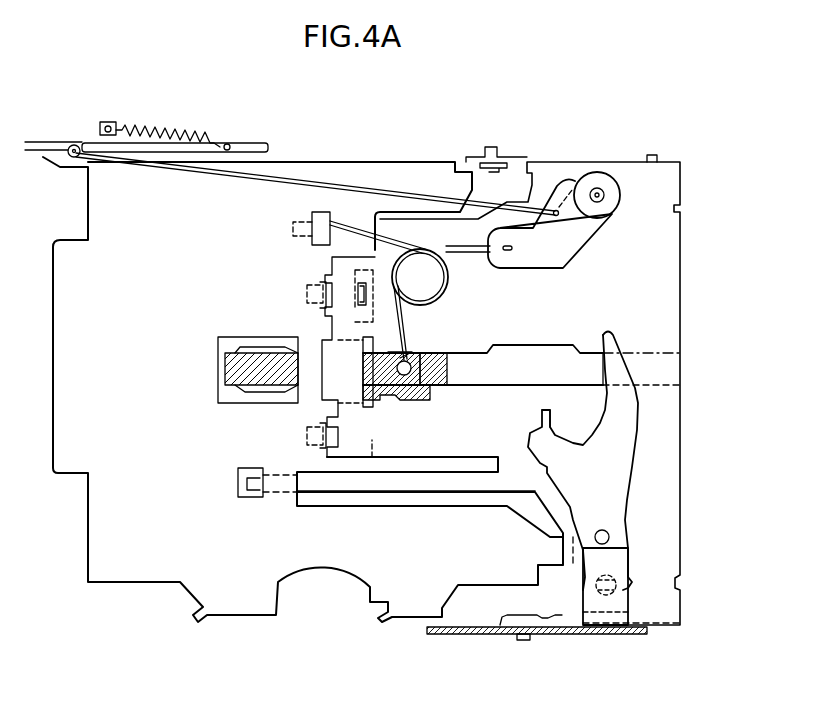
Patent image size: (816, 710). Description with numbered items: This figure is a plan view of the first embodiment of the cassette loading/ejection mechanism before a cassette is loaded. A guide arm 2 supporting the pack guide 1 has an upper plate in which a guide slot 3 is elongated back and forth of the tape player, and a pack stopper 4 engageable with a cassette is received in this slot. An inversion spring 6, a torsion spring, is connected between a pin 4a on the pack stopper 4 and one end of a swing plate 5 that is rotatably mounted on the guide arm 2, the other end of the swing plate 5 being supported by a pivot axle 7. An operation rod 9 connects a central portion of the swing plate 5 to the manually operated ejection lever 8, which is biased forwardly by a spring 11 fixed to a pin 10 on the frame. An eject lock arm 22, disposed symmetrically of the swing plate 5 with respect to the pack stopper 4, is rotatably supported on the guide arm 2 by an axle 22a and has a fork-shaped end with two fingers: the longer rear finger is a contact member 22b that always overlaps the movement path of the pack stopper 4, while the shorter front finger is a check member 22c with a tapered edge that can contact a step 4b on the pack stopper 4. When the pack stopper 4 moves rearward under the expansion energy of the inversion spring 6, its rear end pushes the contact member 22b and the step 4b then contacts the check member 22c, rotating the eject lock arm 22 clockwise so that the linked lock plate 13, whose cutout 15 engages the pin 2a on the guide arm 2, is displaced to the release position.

The pack guide 1 is at (152, 570).
The guide arm 2 is at (510, 615).
The pin 2a is at (522, 640).
The guide slot 3 is at (653, 378).
The pack stopper 4 is at (415, 400).
The pin 4a is at (398, 382).
The step 4b is at (383, 400).
The swing plate 5 is at (583, 232).
The inversion spring 6 is at (412, 250).
The pivot axle 7 is at (597, 192).
The ejection lever 8 is at (258, 143).
The operation rod 9 is at (302, 178).
The pin 10 is at (100, 126).
The spring 11 is at (190, 138).
The lock plate 13 is at (470, 634).
The cutout 15 is at (550, 634).
The eject lock arm 22 is at (625, 448).
The axle 22a is at (609, 535).
The contact member 22b is at (625, 365).
The check member 22c is at (543, 423).